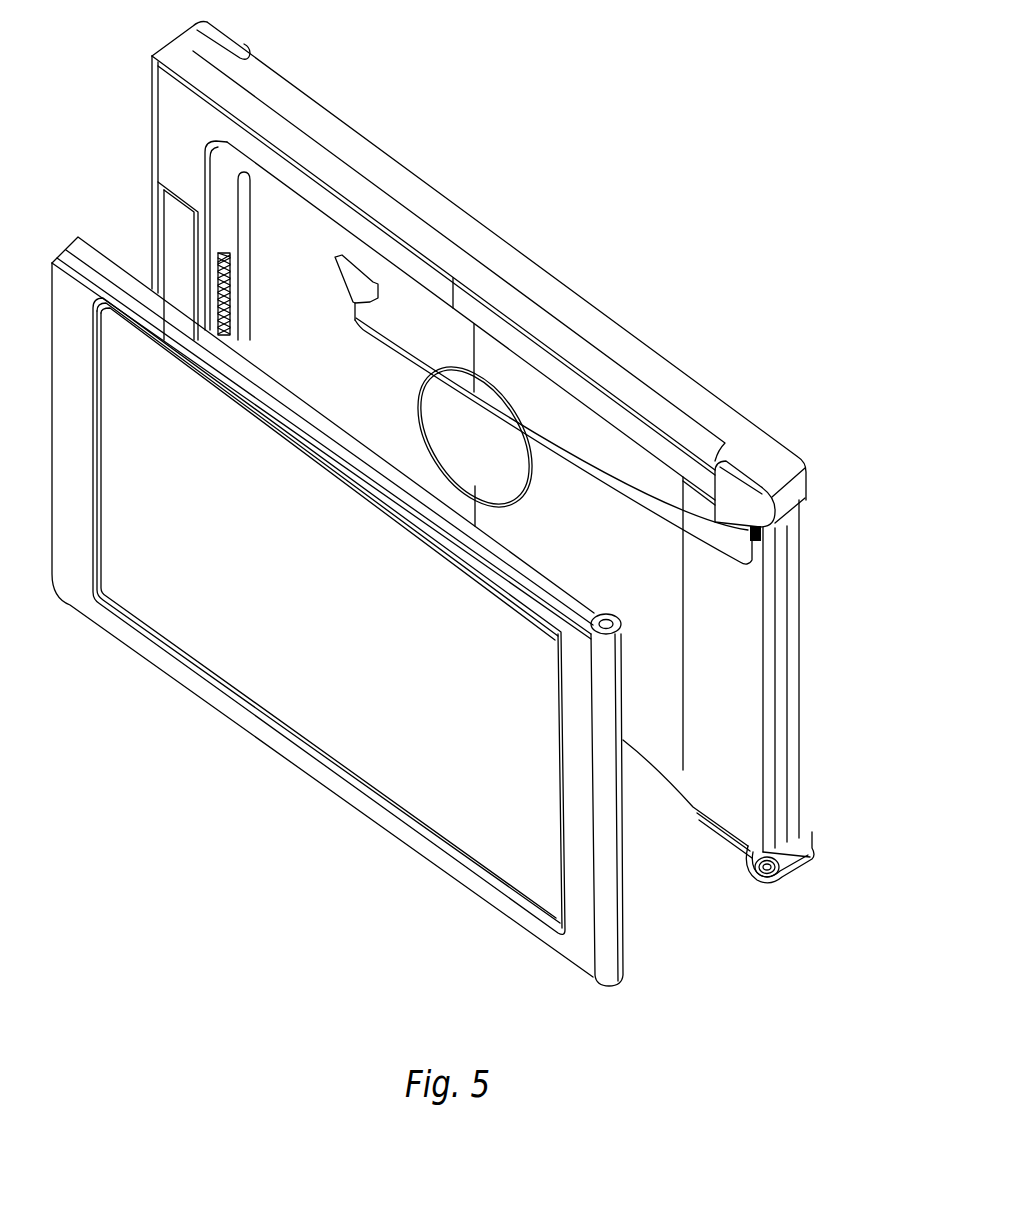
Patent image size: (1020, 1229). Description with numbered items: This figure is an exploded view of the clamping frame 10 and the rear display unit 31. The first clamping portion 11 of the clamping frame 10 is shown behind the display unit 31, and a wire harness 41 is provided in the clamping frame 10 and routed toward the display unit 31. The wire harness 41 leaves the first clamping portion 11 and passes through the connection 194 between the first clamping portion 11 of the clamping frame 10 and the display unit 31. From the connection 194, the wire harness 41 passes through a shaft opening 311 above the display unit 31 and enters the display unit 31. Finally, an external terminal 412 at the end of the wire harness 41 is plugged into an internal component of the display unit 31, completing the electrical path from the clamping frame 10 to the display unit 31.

The clamping frame 10 is at (364, 120).
The first clamping portion 11 is at (579, 352).
The external terminal 412 is at (356, 275).
The wire harness 41 is at (578, 466).
The connection 194 is at (757, 537).
The display unit 31 is at (338, 718).
The shaft opening 311 is at (623, 633).